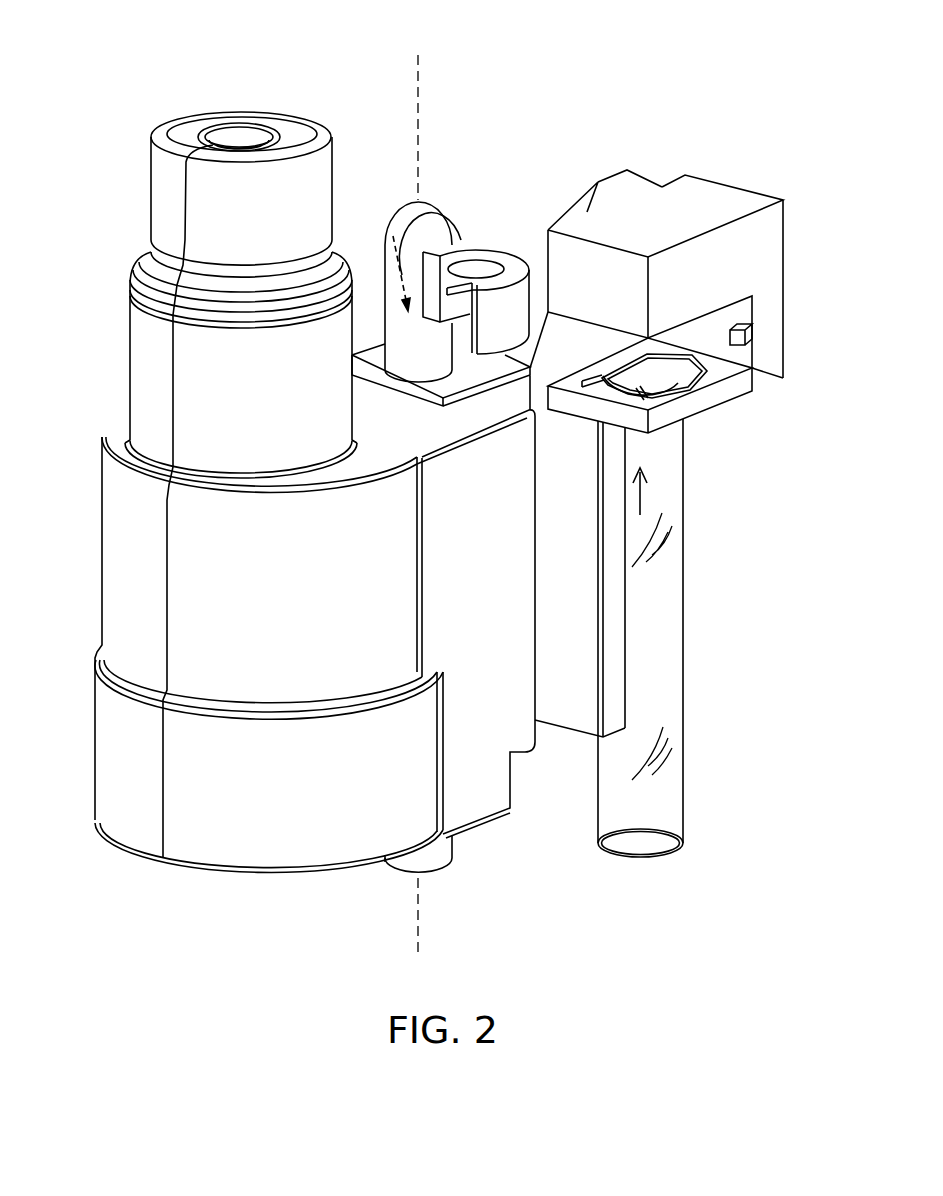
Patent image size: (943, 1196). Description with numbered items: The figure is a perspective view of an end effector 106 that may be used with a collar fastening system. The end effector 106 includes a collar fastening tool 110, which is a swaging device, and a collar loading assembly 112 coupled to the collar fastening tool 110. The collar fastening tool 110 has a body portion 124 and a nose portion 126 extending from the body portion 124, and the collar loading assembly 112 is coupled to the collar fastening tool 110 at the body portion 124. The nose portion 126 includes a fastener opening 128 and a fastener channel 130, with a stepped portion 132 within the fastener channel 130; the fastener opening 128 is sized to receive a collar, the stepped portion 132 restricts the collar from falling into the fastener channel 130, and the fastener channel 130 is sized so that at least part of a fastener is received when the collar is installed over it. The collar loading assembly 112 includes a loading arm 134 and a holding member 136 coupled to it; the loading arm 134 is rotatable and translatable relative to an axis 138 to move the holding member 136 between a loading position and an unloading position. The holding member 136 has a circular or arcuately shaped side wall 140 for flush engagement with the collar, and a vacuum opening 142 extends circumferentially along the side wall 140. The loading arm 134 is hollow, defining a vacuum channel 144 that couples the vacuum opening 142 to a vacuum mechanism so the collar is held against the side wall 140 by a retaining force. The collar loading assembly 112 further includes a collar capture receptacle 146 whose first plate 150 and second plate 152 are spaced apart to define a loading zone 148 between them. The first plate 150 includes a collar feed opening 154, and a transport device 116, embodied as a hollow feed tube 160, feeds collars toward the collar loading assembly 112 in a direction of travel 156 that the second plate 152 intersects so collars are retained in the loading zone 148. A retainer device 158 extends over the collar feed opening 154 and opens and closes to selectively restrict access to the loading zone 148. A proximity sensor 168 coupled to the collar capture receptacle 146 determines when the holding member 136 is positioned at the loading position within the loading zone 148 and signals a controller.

The end effector 106 is at (612, 58).
The collar fastening tool 110 is at (90, 868).
The collar loading assembly 112 is at (752, 142).
The transport device 116 is at (713, 630).
The body portion 124 is at (127, 613).
The nose portion 126 is at (163, 204).
The fastener opening 128 is at (205, 122).
The fastener channel 130 is at (260, 122).
The stepped portion 132 is at (232, 130).
The loading arm 134 is at (440, 213).
The holding member 136 is at (522, 262).
The axis 138 is at (419, 76).
The side wall 140 is at (447, 266).
The vacuum opening 142 is at (463, 286).
The vacuum channel 144 is at (393, 236).
The collar capture receptacle 146 is at (802, 192).
The loading zone 148 is at (733, 380).
The first plate 150 is at (667, 394).
The second plate 152 is at (650, 210).
The collar feed opening 154 is at (655, 400).
The direction of travel 156 is at (644, 490).
The retainer device 158 is at (692, 380).
The hollow feed tube 160 is at (684, 709).
The proximity sensor 168 is at (748, 327).